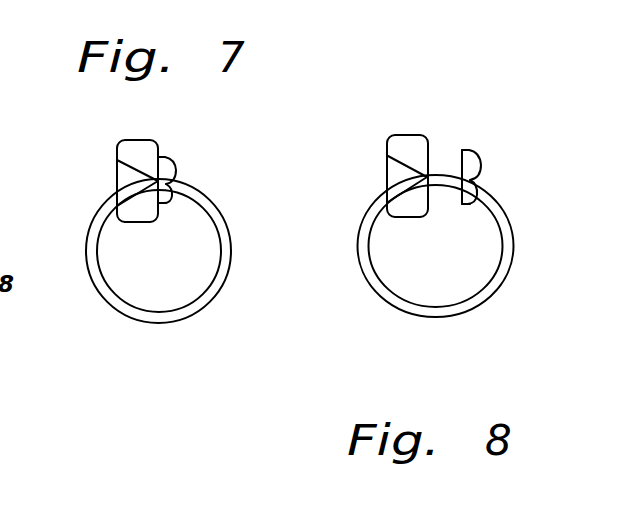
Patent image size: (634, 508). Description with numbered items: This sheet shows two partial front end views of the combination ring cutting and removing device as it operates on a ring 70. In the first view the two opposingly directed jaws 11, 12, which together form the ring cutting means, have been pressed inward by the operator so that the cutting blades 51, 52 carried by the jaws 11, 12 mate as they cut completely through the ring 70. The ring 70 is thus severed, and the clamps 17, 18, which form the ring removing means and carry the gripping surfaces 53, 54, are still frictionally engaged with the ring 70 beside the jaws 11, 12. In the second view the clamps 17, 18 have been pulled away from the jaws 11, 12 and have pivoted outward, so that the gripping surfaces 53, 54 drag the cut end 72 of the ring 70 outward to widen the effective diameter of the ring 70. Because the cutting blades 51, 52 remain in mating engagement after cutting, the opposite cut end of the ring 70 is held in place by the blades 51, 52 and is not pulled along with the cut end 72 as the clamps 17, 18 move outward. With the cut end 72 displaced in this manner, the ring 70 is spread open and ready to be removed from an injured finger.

In FIG. 7, the jaw 11 is at (157, 236).
In FIG. 8, the jaw 11 is at (434, 204).
In FIG. 7, the jaw 12 is at (148, 225).
In FIG. 8, the jaw 12 is at (420, 220).
In FIG. 7, the clamp 17 is at (239, 187).
In FIG. 8, the clamp 17 is at (526, 185).
In FIG. 7, the clamp 18 is at (165, 208).
In FIG. 8, the clamp 18 is at (471, 206).
In FIG. 7, the cutting blade 51 is at (152, 180).
In FIG. 8, the cutting blade 51 is at (422, 178).
In FIG. 7, the cutting blade 52 is at (152, 182).
In FIG. 8, the cutting blade 52 is at (422, 180).
In FIG. 7, the gripping surface 53 is at (176, 172).
In FIG. 8, the gripping surface 53 is at (482, 170).
In FIG. 7, the gripping surface 54 is at (173, 195).
In FIG. 8, the gripping surface 54 is at (478, 188).
In FIG. 7, the ring 70 is at (108, 296).
In FIG. 8, the ring 70 is at (388, 296).
In FIG. 8, the cut end 72 is at (461, 178).